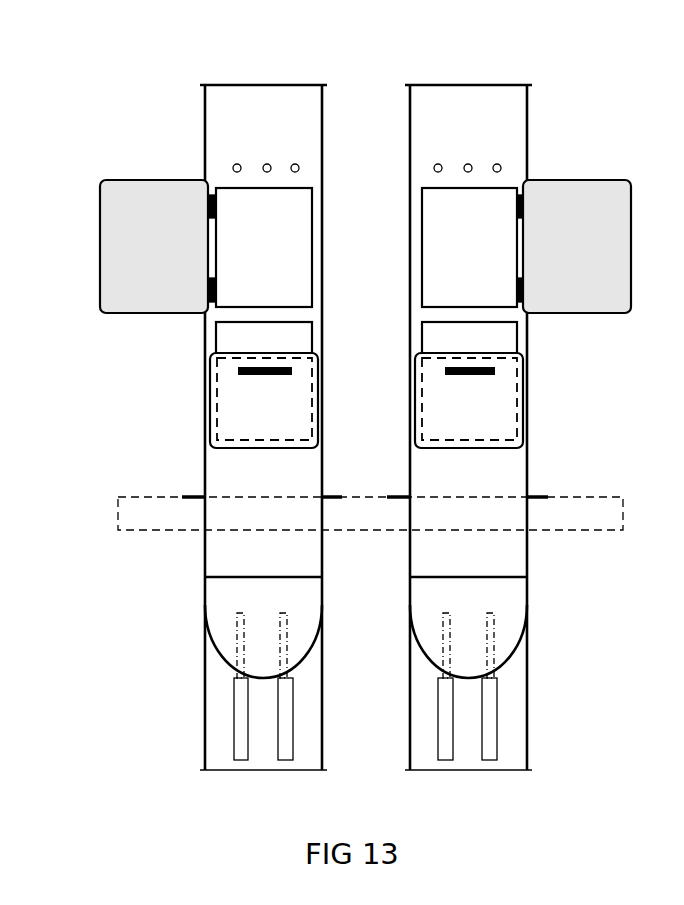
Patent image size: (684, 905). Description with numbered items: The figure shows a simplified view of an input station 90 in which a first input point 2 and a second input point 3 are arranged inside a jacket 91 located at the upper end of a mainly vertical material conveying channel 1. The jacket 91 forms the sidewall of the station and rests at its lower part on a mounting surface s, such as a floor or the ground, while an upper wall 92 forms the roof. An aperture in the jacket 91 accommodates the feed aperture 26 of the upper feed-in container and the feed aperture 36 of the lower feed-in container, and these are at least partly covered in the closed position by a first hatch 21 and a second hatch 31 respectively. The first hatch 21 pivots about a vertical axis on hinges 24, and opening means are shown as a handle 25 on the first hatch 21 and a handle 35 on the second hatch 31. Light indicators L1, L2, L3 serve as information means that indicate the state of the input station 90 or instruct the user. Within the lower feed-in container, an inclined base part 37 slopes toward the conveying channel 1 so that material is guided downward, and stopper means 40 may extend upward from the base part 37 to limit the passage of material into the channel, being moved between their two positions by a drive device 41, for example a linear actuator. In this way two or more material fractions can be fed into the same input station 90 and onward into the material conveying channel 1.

The material conveying channel 1 is at (204, 763).
The first input point 2 is at (600, 225).
The second input point 3 is at (465, 389).
The first hatch 21 is at (613, 208).
The hinges 24 is at (521, 203).
The handle 25 is at (672, 228).
The feed aperture of the feed-in container 26 is at (496, 246).
The second hatch 31 is at (505, 413).
The handle 35 is at (462, 363).
The feed aperture of the feed-in container 36 is at (506, 344).
The base part 37 is at (518, 626).
The stopper means 40 is at (236, 648).
The drive device 41 is at (236, 688).
The input station 90 is at (533, 391).
The jacket 91 is at (528, 100).
The upper wall 92 is at (497, 82).
The mounting surface s is at (585, 489).
The light indicator L1 is at (236, 164).
The light indicator L2 is at (266, 164).
The light indicator L3 is at (294, 164).